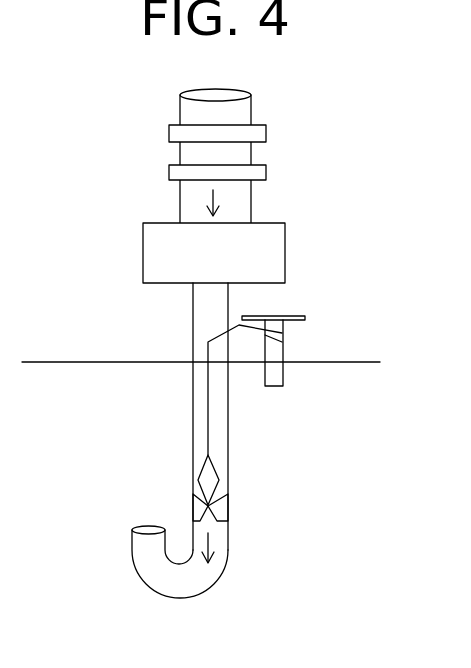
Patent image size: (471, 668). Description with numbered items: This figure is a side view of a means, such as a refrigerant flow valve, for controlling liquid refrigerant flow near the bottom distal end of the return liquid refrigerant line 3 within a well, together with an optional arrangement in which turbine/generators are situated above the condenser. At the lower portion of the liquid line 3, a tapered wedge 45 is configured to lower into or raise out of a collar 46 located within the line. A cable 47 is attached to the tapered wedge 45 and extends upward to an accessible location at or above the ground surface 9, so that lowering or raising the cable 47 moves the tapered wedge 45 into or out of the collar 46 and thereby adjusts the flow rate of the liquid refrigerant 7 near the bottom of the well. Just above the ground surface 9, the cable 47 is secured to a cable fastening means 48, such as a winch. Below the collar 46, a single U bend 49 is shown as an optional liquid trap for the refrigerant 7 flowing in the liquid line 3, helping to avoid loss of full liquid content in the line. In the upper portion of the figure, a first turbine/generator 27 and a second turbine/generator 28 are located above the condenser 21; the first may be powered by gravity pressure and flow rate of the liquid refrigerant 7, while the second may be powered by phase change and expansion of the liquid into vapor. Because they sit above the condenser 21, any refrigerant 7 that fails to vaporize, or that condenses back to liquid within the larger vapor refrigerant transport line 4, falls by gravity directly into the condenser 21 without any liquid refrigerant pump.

The return liquid refrigerant line 3 is at (193, 390).
The vapor refrigerant transport line 4 is at (252, 198).
The refrigerant 7 is at (213, 193).
The ground surface 9 is at (103, 362).
The condenser 21 is at (285, 247).
The first turbine/generator 27 is at (268, 132).
The second turbine/generator 28 is at (268, 169).
The tapered wedge 45 is at (212, 482).
The collar 46 is at (193, 513).
The cable 47 is at (208, 402).
The cable fastening means 48 is at (287, 315).
The U bend 49 is at (162, 576).